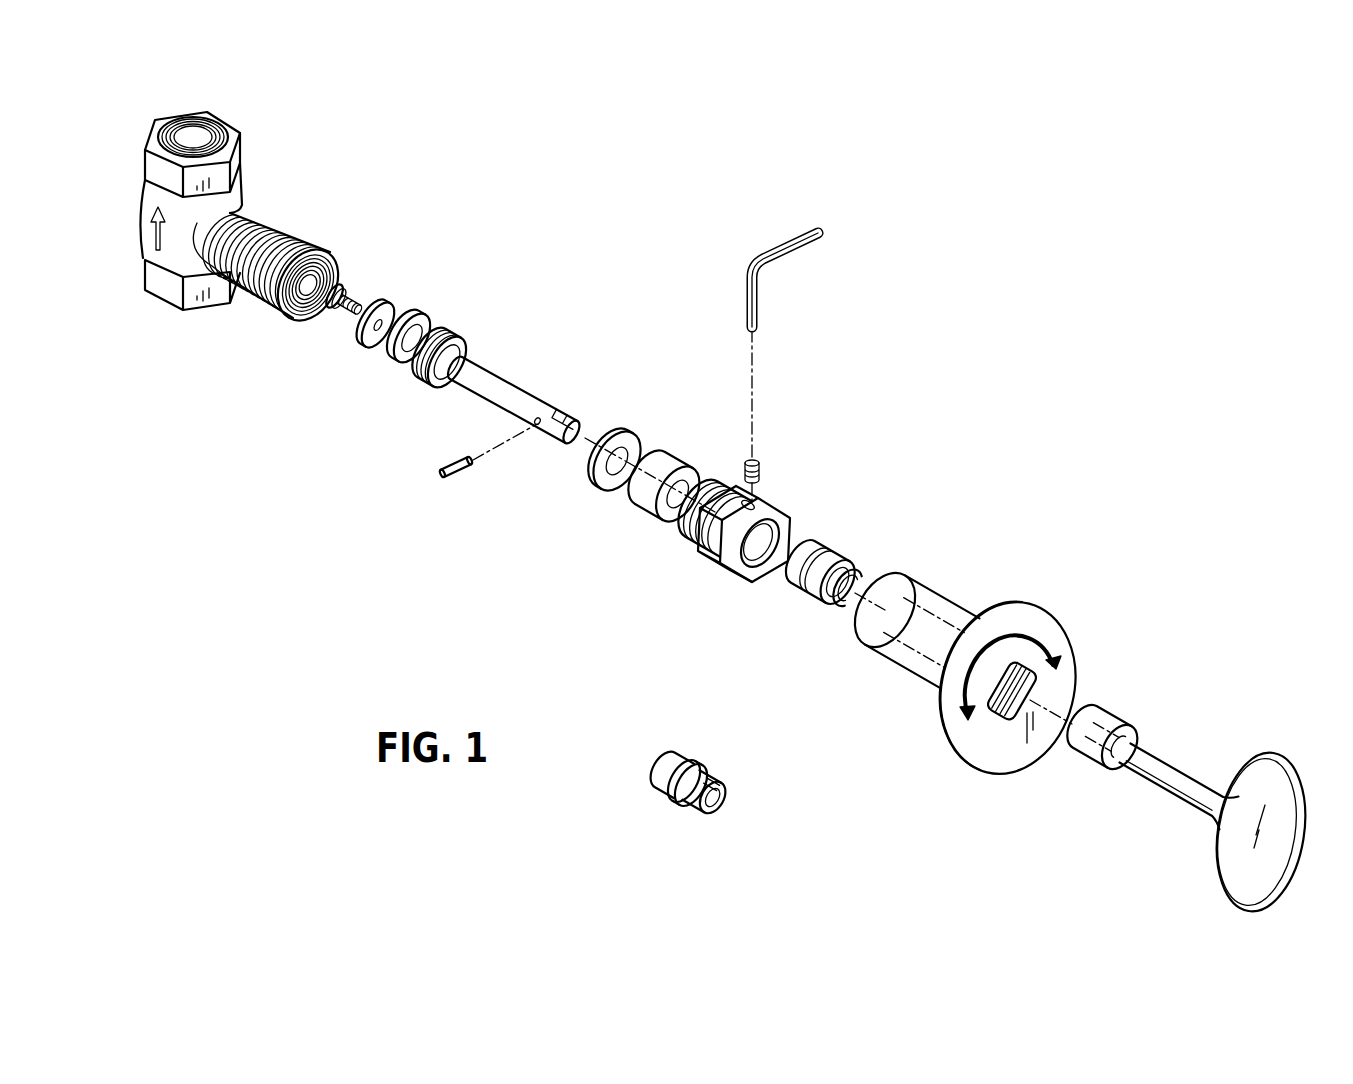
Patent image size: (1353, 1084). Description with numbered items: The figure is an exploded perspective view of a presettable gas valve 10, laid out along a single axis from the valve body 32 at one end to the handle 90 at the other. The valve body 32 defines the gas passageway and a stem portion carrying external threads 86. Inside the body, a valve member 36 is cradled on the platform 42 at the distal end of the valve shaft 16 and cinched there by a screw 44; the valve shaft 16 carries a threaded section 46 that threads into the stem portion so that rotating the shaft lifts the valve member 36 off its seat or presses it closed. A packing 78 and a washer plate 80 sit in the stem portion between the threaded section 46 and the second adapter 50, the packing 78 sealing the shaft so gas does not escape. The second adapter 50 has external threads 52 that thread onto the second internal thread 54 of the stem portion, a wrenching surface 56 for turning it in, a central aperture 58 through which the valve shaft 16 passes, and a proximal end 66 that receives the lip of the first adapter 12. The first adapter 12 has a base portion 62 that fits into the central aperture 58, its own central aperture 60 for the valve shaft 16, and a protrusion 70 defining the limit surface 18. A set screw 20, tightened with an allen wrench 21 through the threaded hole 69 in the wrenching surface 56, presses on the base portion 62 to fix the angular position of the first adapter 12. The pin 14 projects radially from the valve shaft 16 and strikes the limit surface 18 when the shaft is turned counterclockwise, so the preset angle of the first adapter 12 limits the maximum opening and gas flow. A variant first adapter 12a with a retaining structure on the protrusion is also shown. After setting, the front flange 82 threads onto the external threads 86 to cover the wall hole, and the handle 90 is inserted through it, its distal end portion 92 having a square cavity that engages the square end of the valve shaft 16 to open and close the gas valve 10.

The presettable gas valve 10 is at (1101, 573).
The first adapter 12 is at (742, 608).
The first adapter 12a is at (631, 790).
The pin 14 is at (453, 478).
The valve shaft 16 is at (553, 469).
The limit surface 18 is at (862, 585).
The set screw 20 is at (758, 466).
The allen wrench 21 is at (783, 250).
The valve body 32 is at (246, 380).
The valve member 36 is at (434, 393).
The platform 42 is at (425, 320).
The screw 44 is at (370, 352).
The threaded section 46 is at (456, 342).
The second adapter 50 is at (743, 581).
The external threads 52 is at (728, 483).
The second internal thread 54 is at (347, 283).
The wrenching surface 56 is at (725, 524).
The central aperture 58 is at (764, 543).
The central aperture 60 is at (840, 567).
The base portion 62 is at (838, 559).
The proximal end 66 is at (751, 569).
The threaded hole 69 is at (755, 504).
The protrusion 70 is at (768, 583).
The packing 78 is at (694, 466).
The washer plate 80 is at (628, 434).
The front flange 82 is at (969, 790).
The external threads 86 is at (302, 240).
The handle 90 is at (1222, 920).
The distal end portion 92 is at (1088, 705).